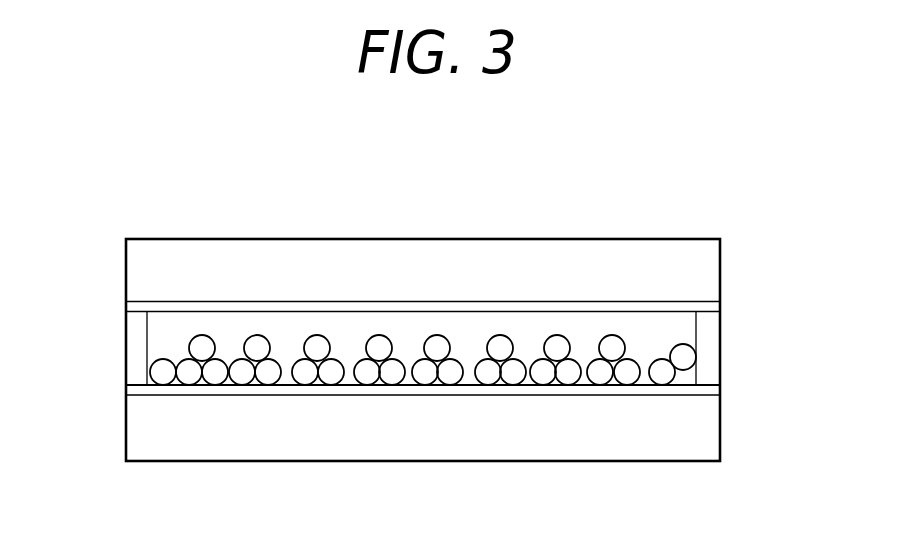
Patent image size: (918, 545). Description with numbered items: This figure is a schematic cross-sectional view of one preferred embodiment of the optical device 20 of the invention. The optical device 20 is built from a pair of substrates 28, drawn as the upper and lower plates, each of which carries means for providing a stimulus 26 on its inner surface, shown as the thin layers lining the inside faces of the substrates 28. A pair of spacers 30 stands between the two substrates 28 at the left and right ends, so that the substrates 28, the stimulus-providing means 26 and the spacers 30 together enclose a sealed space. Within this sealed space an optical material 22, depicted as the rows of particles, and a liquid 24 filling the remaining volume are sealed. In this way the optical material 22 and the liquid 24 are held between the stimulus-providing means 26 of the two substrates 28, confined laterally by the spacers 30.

The optical device 20 is at (780, 256).
The optical material 22 is at (684, 357).
The liquid 24 is at (680, 329).
The means for providing a stimulus 26 is at (130, 392).
The substrates 28 is at (140, 272).
The spacers 30 is at (138, 373).